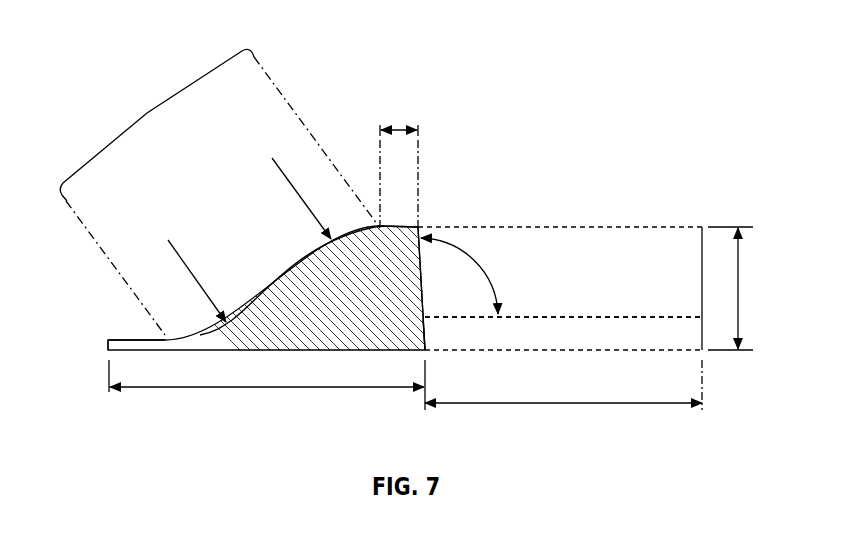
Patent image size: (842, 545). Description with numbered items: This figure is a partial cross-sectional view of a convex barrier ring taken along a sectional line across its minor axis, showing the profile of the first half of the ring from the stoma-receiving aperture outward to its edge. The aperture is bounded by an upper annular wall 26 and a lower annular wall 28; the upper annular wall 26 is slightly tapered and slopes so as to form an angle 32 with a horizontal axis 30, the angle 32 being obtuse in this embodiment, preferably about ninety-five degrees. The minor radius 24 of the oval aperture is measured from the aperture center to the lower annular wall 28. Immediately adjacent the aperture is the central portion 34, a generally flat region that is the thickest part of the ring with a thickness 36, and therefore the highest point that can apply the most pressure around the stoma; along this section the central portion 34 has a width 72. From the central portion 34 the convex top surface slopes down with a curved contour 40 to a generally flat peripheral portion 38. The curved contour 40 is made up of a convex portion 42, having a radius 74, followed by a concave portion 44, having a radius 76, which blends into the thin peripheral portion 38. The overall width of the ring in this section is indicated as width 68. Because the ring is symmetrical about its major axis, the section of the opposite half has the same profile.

The minor radius 24 is at (573, 404).
The upper annular wall 26 is at (420, 258).
The lower annular wall 28 is at (426, 333).
The horizontal axis 30 is at (647, 317).
The angle 32 is at (492, 270).
The central portion 34 is at (408, 226).
The thickness 36 is at (742, 288).
The peripheral portion 38 is at (123, 340).
The curved contour 40 is at (147, 113).
The convex portion 42 is at (328, 247).
The concave portion 44 is at (231, 320).
The width 68 is at (252, 388).
The width 72 is at (402, 127).
The radius 74 is at (283, 173).
The radius 76 is at (175, 250).